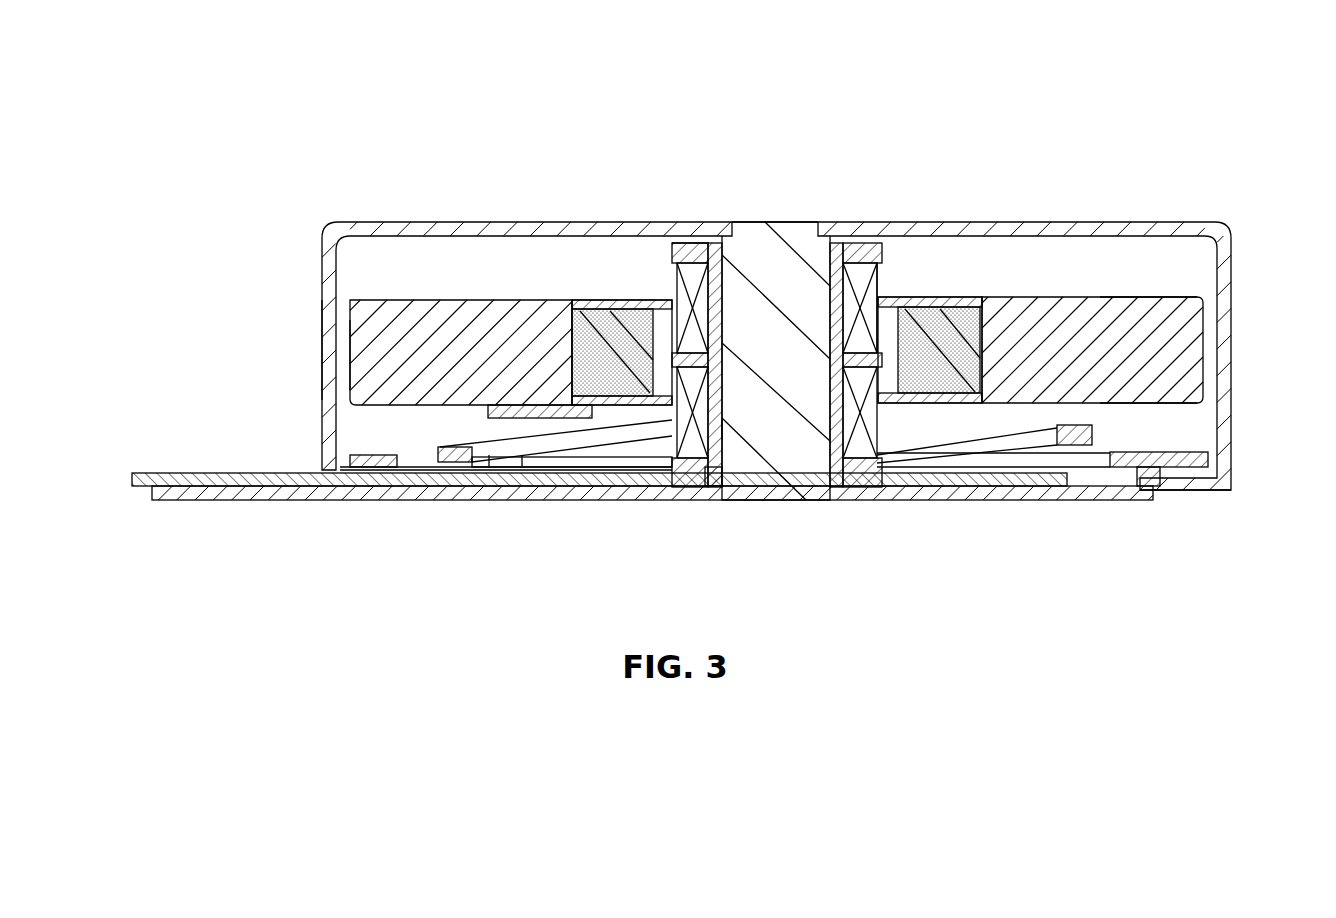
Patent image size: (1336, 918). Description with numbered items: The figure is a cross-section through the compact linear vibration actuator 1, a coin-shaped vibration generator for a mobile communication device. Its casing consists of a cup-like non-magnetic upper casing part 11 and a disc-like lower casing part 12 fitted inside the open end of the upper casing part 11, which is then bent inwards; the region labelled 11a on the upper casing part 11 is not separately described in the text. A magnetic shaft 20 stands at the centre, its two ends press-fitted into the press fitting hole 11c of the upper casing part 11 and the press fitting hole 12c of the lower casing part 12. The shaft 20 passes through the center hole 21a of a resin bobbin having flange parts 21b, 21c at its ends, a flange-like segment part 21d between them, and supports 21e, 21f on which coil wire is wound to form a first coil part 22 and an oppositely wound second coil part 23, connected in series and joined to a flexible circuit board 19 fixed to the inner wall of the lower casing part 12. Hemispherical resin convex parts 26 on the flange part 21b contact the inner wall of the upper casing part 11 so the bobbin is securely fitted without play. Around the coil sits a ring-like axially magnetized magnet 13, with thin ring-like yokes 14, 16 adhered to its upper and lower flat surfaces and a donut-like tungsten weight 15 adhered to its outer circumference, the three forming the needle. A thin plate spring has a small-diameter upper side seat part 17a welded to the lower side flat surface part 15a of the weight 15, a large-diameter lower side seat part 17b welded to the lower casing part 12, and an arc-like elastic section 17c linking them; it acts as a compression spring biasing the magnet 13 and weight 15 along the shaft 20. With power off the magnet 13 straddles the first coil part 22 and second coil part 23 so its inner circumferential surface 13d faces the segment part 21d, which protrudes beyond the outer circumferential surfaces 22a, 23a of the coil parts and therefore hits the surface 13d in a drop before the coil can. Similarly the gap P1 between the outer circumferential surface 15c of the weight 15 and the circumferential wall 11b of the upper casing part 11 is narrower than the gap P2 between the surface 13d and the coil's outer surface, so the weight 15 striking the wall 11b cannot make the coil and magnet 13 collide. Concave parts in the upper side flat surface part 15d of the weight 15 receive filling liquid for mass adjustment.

The linear vibration actuator 1 is at (1074, 87).
The upper casing part 11 is at (317, 264).
The housing lower end 11a is at (1212, 494).
The circumferential wall 11b is at (326, 336).
The press fitting hole 11c is at (745, 224).
The lower casing part 12 is at (300, 502).
The press fitting hole 12c is at (723, 478).
The magnet 13 is at (953, 307).
The inner circumferential surface 13d is at (653, 300).
The yoke 14 is at (587, 300).
The weight 15 is at (1142, 280).
The lower side flat surface part 15a is at (1178, 407).
The outer circumferential surface 15c is at (349, 360).
The upper side flat surface part 15d is at (1178, 297).
The yoke 16 is at (603, 475).
The upper side seat part 17a is at (486, 428).
The lower side seat part 17b is at (393, 501).
The elastic section 17c is at (482, 500).
The flexible circuit board 19 is at (236, 472).
The shaft 20 is at (778, 483).
The center hole 21a is at (737, 343).
The flange part 21b is at (672, 250).
The flange part 21c is at (683, 480).
The segment part 21d is at (672, 484).
The support 21e is at (722, 290).
The support 21f is at (738, 420).
The first coil part 22 is at (863, 260).
The outer circumferential surface 22a is at (883, 285).
The second coil part 23 is at (855, 465).
The outer circumferential surface 23a is at (893, 458).
The convex parts 26 is at (687, 240).
The gap P1 is at (335, 470).
The gap P2 is at (652, 470).